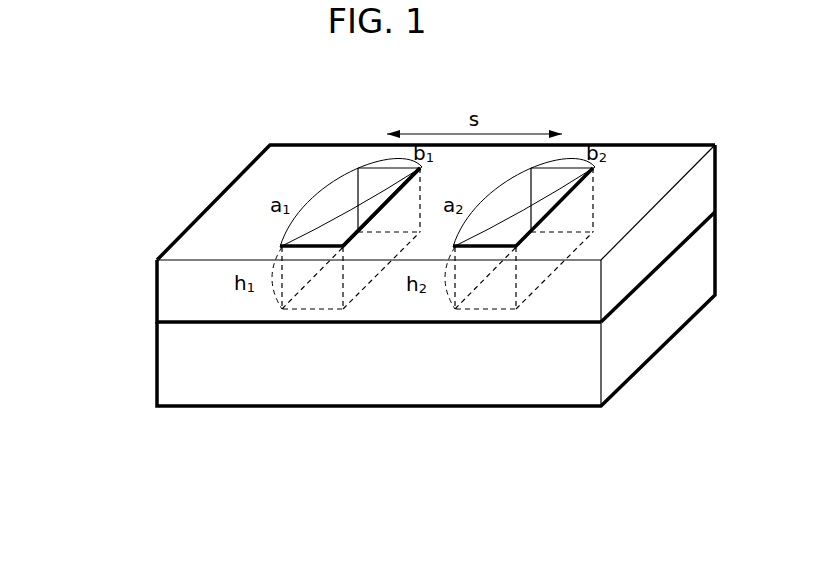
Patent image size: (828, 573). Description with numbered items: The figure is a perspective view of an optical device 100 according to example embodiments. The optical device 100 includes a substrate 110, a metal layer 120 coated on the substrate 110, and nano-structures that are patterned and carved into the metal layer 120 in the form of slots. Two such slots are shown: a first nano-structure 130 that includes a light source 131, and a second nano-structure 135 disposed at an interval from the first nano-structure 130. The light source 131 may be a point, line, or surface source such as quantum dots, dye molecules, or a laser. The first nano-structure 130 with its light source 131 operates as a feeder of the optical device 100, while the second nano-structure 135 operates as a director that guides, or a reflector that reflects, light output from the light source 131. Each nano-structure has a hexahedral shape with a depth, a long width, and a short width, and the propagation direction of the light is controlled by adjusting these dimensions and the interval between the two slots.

The optical device 100 is at (172, 150).
The substrate 110 is at (157, 367).
The metal layer 120 is at (157, 293).
The first nano-structure 130 is at (387, 175).
The light source 131 is at (349, 225).
The second nano-structure 135 is at (567, 175).